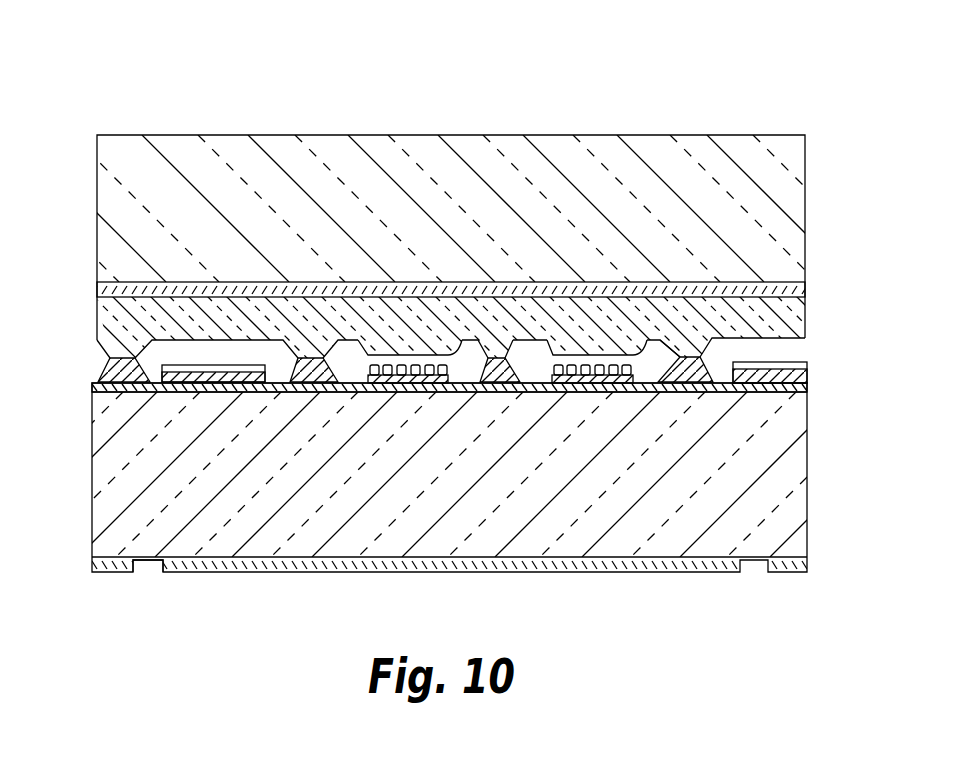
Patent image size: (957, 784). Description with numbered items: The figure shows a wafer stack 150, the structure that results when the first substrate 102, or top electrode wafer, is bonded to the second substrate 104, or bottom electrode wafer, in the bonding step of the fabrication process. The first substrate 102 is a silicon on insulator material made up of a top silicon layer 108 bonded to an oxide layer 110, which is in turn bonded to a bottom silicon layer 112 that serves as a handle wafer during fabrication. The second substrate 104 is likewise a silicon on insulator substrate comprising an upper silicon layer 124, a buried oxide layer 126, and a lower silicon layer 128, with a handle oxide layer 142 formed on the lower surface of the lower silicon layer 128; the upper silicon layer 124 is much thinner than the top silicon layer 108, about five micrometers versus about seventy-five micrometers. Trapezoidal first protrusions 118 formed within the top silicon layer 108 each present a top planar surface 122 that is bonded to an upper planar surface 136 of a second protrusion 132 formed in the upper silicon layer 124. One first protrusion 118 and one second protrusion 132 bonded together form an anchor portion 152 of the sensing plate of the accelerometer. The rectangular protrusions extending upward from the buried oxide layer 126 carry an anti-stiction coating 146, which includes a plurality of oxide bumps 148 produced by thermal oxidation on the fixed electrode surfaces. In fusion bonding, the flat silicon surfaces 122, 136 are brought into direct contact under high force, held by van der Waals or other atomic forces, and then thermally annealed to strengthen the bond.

The wafer stack 150 is at (186, 78).
The first substrate 102 is at (81, 190).
The second substrate 104 is at (78, 469).
The top silicon layer 108 is at (98, 322).
The oxide layer 110 is at (138, 152).
The bottom silicon layer 112 is at (96, 288).
The first protrusions 118 is at (688, 355).
The top planar surfaces 122 is at (698, 382).
The upper silicon layer 124 is at (106, 370).
The buried oxide layer 126 is at (92, 386).
The lower silicon layer 128 is at (93, 545).
The second protrusions 132 is at (662, 383).
The upper planar surface 136 is at (687, 353).
The handle oxide layer 142 is at (117, 572).
The anti-stiction coating 146 is at (808, 365).
The bumps 148 is at (466, 340).
The anchor portion 152 is at (532, 339).